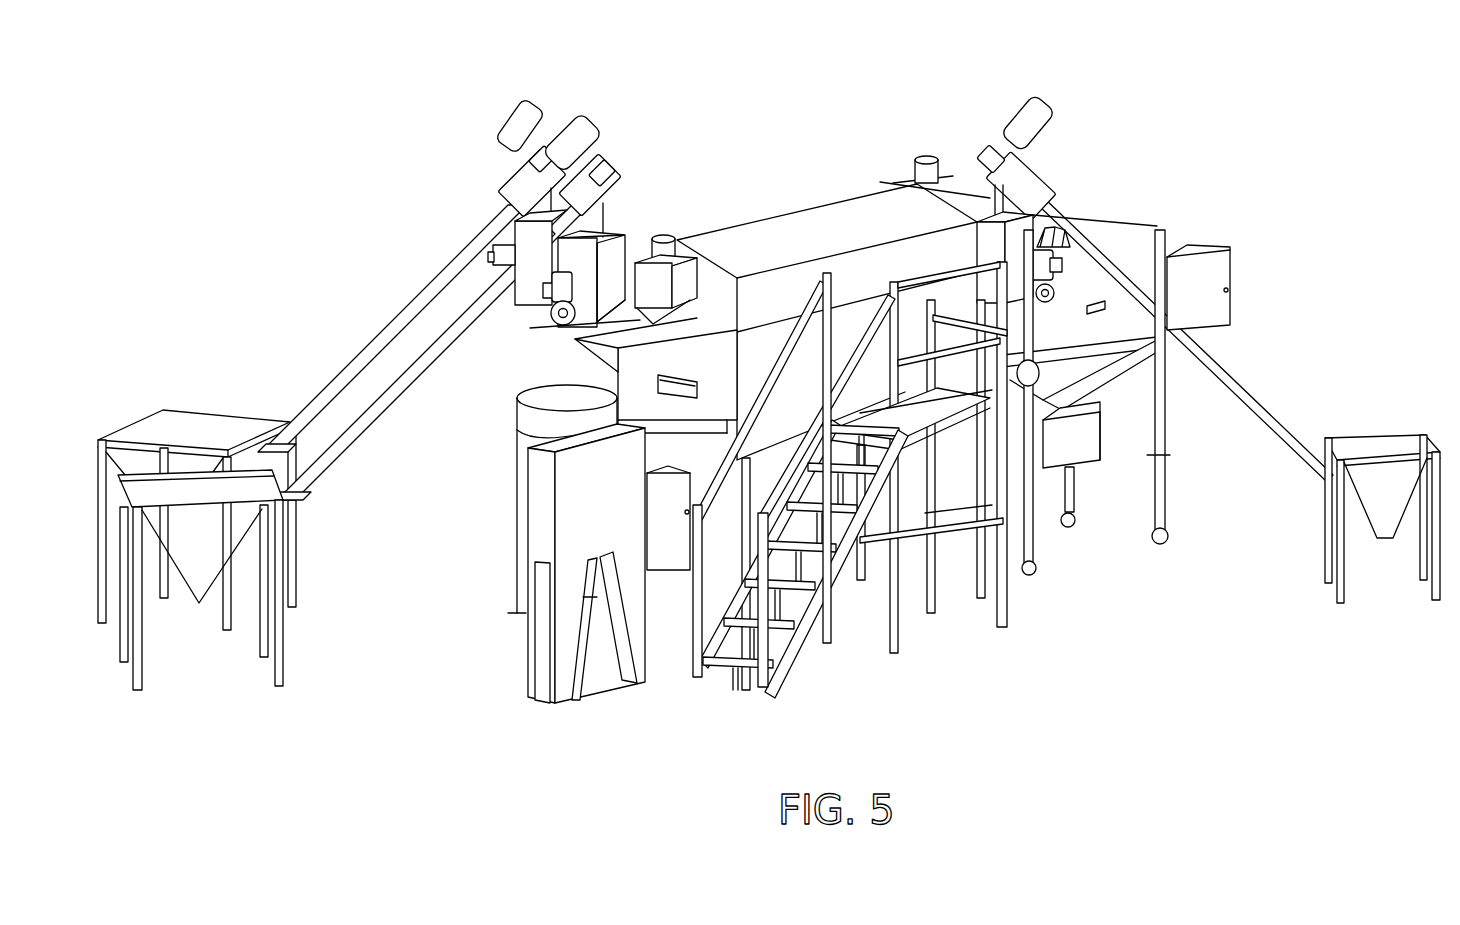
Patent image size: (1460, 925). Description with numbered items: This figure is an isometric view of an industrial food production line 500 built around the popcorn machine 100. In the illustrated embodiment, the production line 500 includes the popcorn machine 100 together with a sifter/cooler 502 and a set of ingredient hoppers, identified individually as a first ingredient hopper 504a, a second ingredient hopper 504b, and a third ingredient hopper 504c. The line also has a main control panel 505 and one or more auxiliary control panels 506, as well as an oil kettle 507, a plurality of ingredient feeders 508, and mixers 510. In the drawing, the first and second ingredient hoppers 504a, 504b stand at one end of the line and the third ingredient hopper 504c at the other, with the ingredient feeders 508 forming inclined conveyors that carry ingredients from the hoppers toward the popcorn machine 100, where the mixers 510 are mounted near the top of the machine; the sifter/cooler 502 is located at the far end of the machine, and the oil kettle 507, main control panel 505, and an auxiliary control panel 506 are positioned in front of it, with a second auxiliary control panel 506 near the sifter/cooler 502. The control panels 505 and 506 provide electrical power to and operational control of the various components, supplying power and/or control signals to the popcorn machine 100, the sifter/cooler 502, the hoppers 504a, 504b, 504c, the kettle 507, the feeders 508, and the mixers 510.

The industrial food production line 500 is at (1012, 60).
The popcorn machine 100 is at (793, 186).
The sifter/cooler 502 is at (1126, 226).
The first ingredient hopper 504a is at (192, 428).
The second ingredient hopper 504b is at (198, 597).
The third ingredient hopper 504c is at (1378, 447).
The main control panel 505 is at (540, 487).
The auxiliary control panel 506 is at (680, 535).
The oil kettle 507 is at (520, 403).
The ingredient feeder 508 is at (527, 180).
The mixer 510 is at (580, 305).